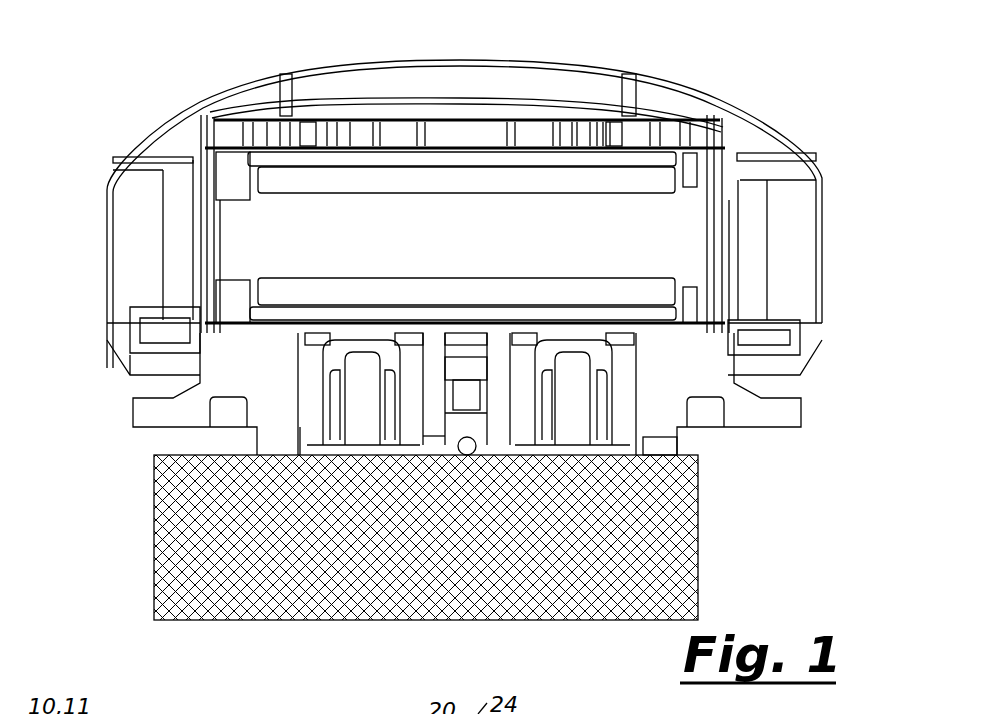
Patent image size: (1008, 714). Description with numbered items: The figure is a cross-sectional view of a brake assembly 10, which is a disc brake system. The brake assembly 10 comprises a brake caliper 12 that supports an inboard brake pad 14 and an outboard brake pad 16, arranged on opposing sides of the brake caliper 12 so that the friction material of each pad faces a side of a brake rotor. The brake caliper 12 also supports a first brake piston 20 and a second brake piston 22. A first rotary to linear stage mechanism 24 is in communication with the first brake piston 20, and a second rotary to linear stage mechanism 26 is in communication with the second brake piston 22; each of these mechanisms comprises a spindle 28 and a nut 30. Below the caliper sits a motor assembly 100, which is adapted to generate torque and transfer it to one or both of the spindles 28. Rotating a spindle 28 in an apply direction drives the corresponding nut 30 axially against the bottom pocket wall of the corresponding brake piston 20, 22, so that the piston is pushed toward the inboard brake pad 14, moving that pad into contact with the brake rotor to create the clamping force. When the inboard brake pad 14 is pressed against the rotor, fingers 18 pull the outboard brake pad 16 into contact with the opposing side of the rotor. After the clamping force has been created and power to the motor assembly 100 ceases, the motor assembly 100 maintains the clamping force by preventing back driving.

The brake assembly 10 is at (178, 80).
The brake caliper 12 is at (752, 126).
The inboard brake pad 14 is at (631, 297).
The outboard brake pad 16 is at (518, 178).
The fingers 18 is at (308, 138).
The first brake piston 20 is at (308, 358).
The second brake piston 22 is at (620, 364).
The first rotary to linear stage mechanism 24 is at (332, 425).
The second rotary to linear stage mechanism 26 is at (606, 427).
The spindle 28 is at (385, 402).
The nut 30 is at (345, 398).
The motor assembly 100 is at (152, 583).